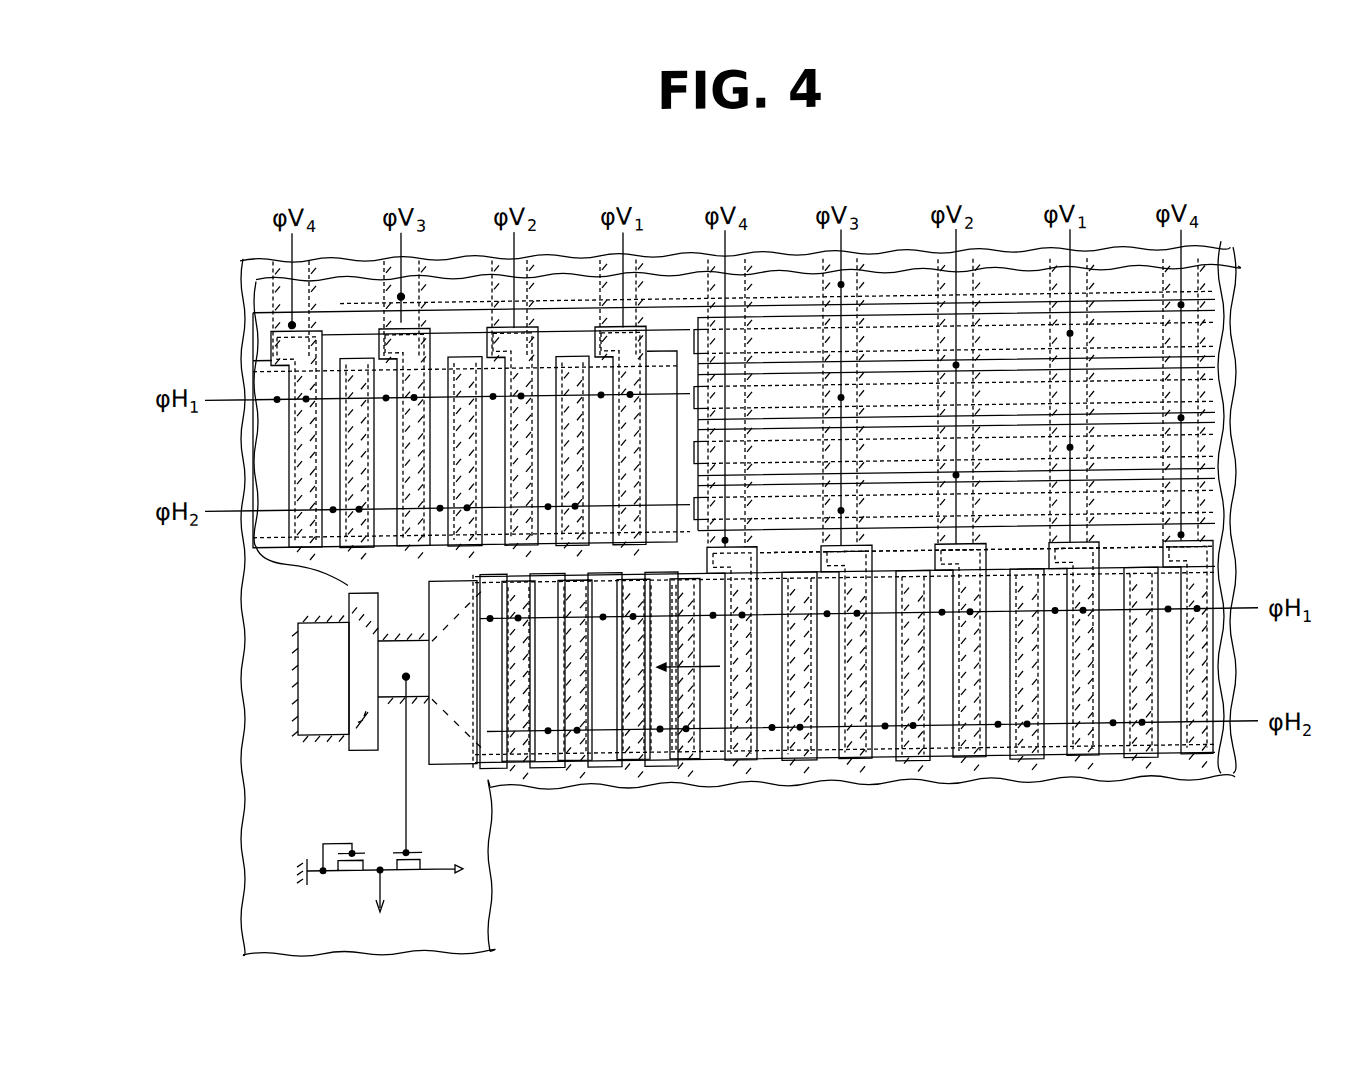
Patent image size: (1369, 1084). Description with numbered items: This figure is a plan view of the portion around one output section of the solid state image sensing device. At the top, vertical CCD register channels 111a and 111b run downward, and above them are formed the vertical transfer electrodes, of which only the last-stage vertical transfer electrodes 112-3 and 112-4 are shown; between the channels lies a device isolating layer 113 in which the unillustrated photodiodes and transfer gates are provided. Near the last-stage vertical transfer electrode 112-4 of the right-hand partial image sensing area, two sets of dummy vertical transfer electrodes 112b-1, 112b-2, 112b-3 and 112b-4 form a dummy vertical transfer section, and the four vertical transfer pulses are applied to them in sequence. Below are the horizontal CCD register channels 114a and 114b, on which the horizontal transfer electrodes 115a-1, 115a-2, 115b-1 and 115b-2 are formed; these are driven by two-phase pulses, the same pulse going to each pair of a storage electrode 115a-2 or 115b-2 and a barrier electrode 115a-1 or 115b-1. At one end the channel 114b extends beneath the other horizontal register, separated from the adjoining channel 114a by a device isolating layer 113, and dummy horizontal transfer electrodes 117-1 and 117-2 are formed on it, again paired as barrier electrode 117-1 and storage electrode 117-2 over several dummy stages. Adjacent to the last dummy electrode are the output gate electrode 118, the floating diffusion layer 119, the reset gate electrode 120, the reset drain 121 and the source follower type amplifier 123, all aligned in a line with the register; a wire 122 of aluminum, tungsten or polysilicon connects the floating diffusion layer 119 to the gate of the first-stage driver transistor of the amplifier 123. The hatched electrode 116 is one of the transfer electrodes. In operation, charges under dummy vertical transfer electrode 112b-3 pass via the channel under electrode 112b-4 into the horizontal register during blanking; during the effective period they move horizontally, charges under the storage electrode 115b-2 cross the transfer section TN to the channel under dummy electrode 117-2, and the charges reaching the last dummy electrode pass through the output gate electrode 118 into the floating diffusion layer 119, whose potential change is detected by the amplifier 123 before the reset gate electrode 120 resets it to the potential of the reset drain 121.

The vertical CCD register channel 111a is at (268, 270).
The vertical CCD register channel 111b is at (700, 274).
The vertical transfer electrode 112-3 is at (1223, 296).
The vertical transfer electrode 112-4 is at (1223, 318).
The dummy vertical transfer electrode 112b-1 is at (1223, 347).
The dummy vertical transfer electrode 112b-2 is at (1223, 377).
The dummy vertical transfer electrode 112b-3 is at (1223, 403).
The dummy vertical transfer electrode 112b-4 is at (1223, 430).
The device isolating layer 113 is at (336, 274).
The horizontal CCD register channel 114a is at (245, 469).
The horizontal CCD register channel 114b is at (1228, 665).
The barrier electrode 115a-1 is at (358, 531).
The storage electrode 115a-2 is at (300, 538).
The barrier electrode 115b-1 is at (1025, 756).
The storage electrode 115b-2 is at (1008, 755).
The transfer electrode 116 is at (300, 434).
The dummy horizontal transfer electrode 117-1 is at (712, 673).
The dummy horizontal transfer electrode 117-2 is at (660, 769).
The output gate electrode 118 is at (447, 766).
The floating diffusion layer 119 is at (405, 657).
The reset gate electrode 120 is at (343, 586).
The reset drain 121 is at (313, 667).
The wire 122 is at (404, 785).
The source follower type amplifier 123 is at (405, 877).
The transfer section TN is at (707, 754).